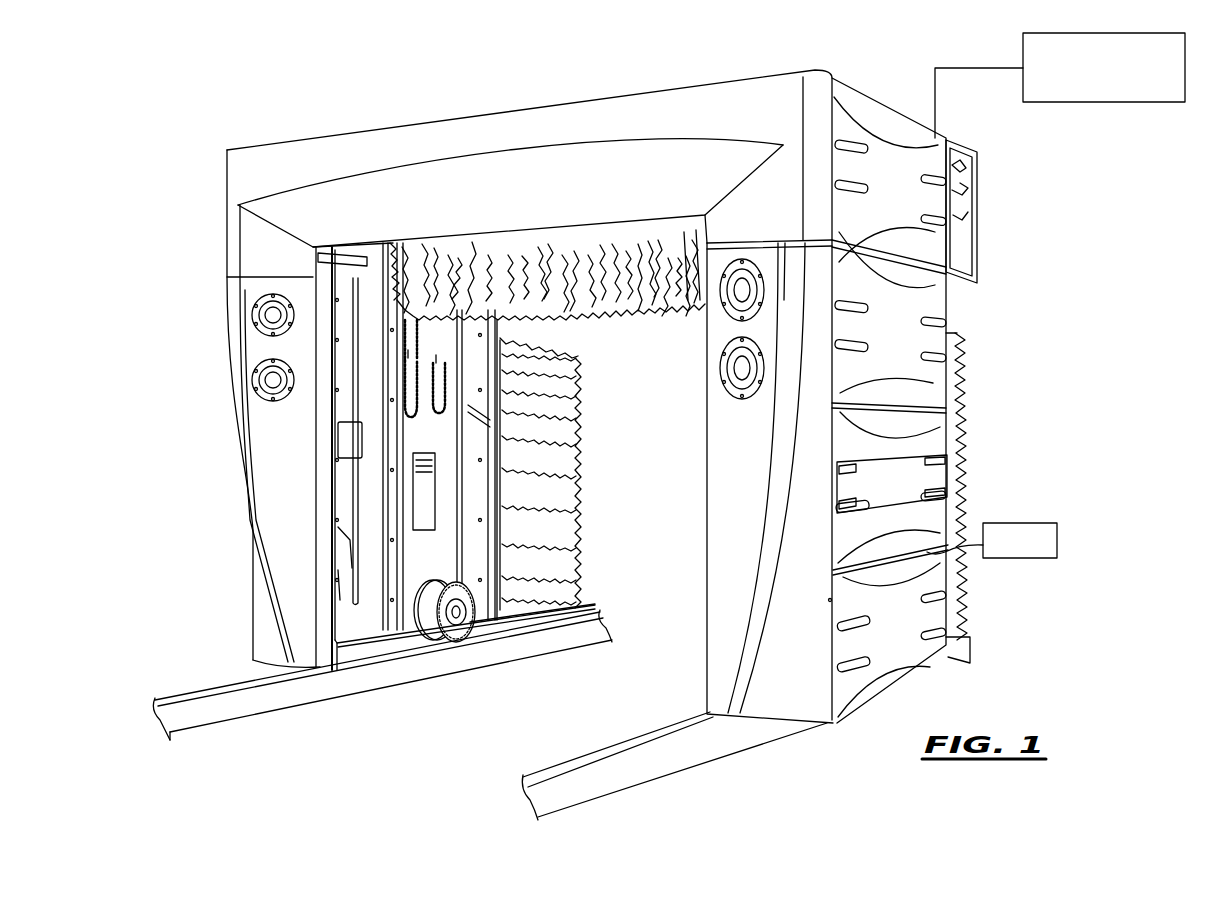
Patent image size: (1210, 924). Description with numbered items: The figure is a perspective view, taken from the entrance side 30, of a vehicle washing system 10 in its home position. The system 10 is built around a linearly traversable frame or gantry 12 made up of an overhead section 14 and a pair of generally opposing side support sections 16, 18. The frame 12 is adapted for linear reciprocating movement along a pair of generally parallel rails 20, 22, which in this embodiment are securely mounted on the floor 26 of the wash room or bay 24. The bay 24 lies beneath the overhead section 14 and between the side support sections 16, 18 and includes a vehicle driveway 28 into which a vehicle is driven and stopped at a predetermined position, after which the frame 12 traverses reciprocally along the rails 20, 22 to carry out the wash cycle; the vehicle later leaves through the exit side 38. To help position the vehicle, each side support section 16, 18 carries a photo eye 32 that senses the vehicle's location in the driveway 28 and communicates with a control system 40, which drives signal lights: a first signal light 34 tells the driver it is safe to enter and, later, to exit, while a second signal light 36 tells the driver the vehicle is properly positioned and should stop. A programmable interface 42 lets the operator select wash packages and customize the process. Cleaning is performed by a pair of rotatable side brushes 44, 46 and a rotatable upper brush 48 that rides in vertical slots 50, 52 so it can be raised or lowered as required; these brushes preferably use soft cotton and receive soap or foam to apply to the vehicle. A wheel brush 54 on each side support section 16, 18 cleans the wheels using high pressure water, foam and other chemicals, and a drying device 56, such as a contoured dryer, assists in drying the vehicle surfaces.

The vehicle washing system 10 is at (796, 44).
The frame or gantry 12 is at (305, 150).
The overhead section 14 is at (586, 178).
The side support section 16 is at (917, 447).
The side support section 18 is at (257, 473).
The rail 20 is at (633, 760).
The rail 22 is at (242, 700).
The wash room or bay 24 is at (642, 440).
The floor 26 is at (500, 713).
The vehicle driveway 28 is at (367, 773).
The entrance side 30 is at (298, 746).
The photo eye 32 is at (350, 440).
The first signal light 34 is at (270, 318).
The second signal light 36 is at (270, 382).
The exit side 38 is at (975, 316).
The control system 40 is at (933, 484).
The programmable interface 42 is at (1033, 558).
The side brush 44 is at (965, 380).
The side brush 46 is at (562, 496).
The upper brush 48 is at (600, 308).
The vertical slot 50 is at (397, 542).
The vertical slot 52 is at (458, 393).
The wheel brush 54 is at (460, 634).
The drying device 56 is at (482, 544).